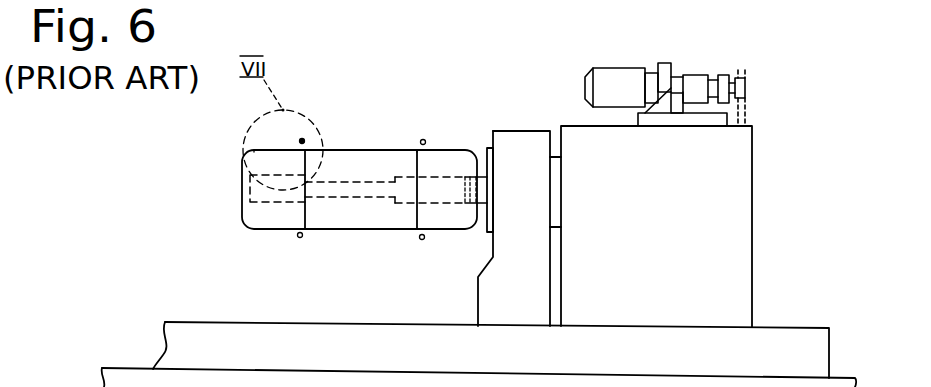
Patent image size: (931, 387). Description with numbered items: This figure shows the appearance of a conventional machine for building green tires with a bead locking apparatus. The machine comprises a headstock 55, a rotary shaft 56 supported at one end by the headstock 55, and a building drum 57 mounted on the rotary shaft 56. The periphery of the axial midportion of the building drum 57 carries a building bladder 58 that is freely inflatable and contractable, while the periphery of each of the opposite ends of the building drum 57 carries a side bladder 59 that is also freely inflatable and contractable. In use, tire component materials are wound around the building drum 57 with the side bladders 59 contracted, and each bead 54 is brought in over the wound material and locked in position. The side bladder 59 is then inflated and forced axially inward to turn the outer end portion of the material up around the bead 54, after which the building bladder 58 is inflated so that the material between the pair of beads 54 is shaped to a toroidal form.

The bead 54 is at (299, 238).
The headstock 55 is at (742, 190).
The rotary shaft 56 is at (480, 177).
The building drum 57 is at (379, 147).
The building bladder 58 is at (345, 165).
The side bladder 59 is at (258, 160).